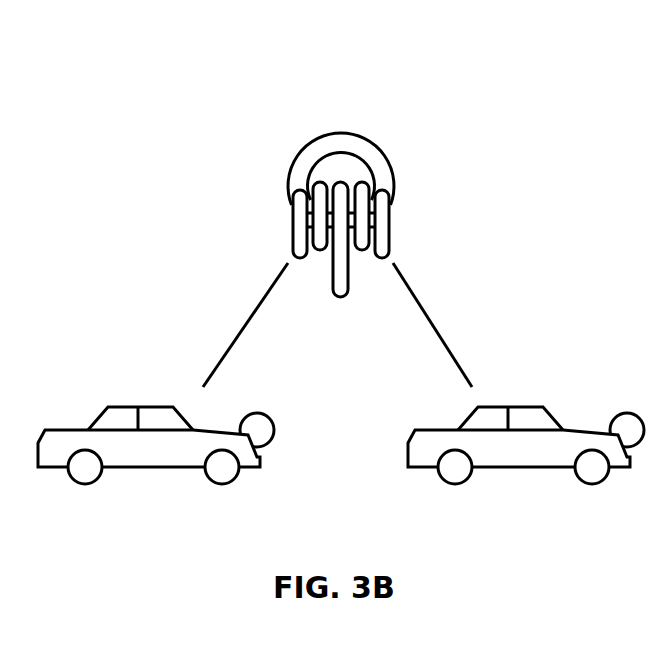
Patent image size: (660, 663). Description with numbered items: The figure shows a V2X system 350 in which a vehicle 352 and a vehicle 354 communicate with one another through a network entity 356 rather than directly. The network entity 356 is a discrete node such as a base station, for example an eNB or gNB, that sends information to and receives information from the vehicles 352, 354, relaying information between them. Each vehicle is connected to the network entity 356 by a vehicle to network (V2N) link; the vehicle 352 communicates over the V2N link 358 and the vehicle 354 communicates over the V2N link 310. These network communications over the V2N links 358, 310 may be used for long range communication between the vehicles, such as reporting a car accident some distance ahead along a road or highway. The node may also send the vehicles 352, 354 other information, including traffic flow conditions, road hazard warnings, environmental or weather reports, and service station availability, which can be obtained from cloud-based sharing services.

The V2X system 350 is at (191, 88).
The network entity 356 is at (392, 230).
The vehicle to network (V2N) link 358 is at (228, 350).
The vehicle to network (V2N) link 310 is at (428, 313).
The vehicle 352 is at (175, 468).
The vehicle 354 is at (538, 468).